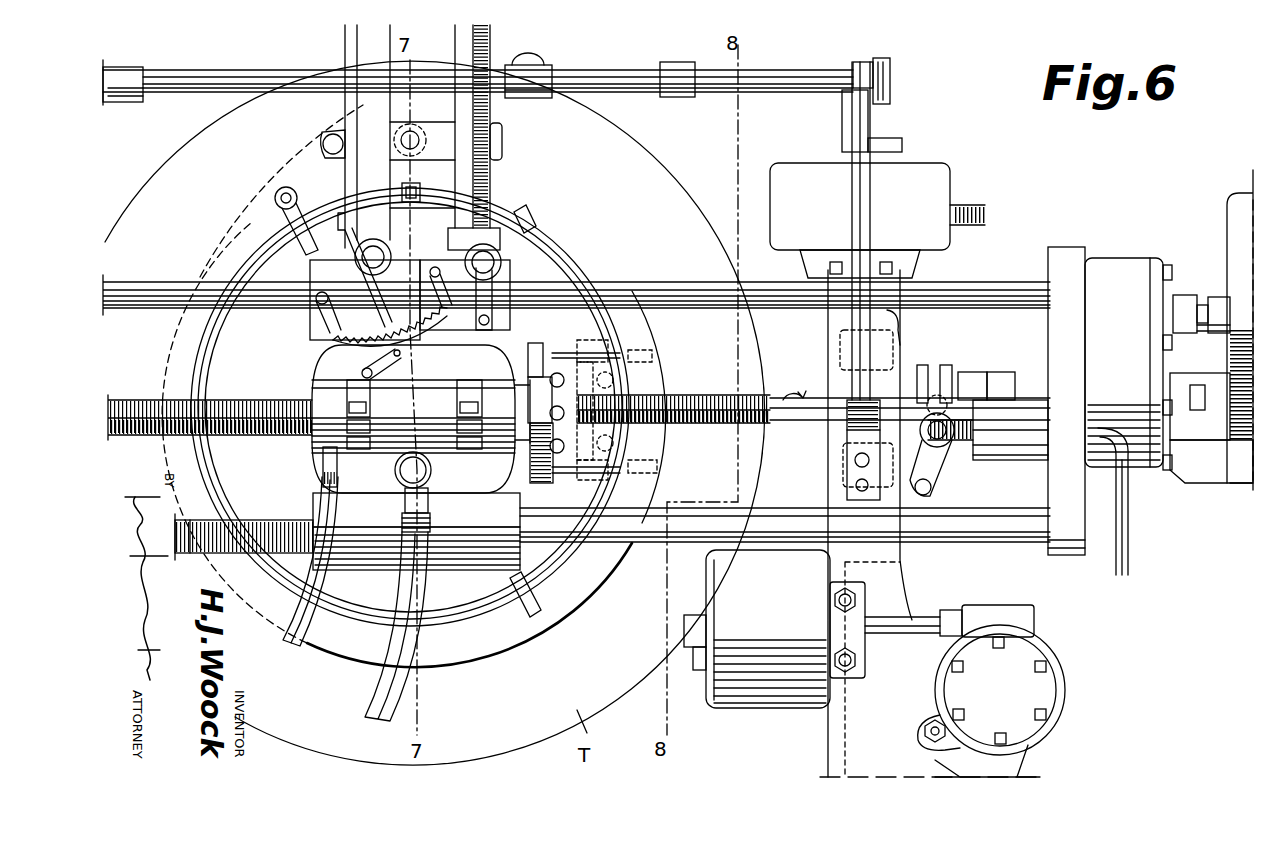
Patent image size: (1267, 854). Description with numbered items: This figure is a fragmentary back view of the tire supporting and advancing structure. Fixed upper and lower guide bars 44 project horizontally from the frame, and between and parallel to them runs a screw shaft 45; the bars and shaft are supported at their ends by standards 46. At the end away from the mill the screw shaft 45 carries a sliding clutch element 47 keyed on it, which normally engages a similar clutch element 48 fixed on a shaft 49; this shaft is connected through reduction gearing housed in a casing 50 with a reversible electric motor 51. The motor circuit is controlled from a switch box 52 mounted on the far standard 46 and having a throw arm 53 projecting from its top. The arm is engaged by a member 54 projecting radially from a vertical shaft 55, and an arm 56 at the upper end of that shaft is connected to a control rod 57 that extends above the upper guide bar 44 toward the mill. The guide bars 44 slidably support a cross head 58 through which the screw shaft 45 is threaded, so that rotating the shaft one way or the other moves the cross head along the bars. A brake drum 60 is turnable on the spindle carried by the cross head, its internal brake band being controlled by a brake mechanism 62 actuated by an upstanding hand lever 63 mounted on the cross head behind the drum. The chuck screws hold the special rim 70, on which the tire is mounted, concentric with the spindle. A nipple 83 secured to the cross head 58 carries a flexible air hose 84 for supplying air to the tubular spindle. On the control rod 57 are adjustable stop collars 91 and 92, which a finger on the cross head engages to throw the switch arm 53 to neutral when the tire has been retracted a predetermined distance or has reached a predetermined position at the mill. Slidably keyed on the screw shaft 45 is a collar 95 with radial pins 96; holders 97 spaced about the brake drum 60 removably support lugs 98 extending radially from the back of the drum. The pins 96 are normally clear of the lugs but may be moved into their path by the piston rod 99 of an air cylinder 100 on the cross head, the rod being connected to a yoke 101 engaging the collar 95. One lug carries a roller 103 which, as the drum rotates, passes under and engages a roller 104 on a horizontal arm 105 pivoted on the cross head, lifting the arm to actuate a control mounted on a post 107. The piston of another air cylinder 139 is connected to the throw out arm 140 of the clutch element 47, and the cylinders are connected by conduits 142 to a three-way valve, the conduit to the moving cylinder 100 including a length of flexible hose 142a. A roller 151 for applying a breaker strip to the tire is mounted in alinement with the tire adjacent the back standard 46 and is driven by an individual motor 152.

The guide bars 44 is at (680, 290).
The screw shaft 45 is at (272, 432).
The standards 46 is at (840, 312).
The sliding clutch element 47 is at (968, 372).
The clutch element 48 is at (996, 372).
The shaft 49 is at (1045, 392).
The casing 50 is at (1120, 280).
The reversible electric motor 51 is at (1243, 195).
The switch box 52 is at (940, 180).
The throw arm 53 is at (905, 145).
The member 54 is at (880, 140).
The vertical shaft 55 is at (855, 197).
The arm 56 is at (892, 80).
The control rod 57 is at (605, 78).
The cross head 58 is at (372, 470).
The brake drum 60 is at (580, 268).
The brake mechanism 62 is at (325, 350).
The hand lever 63 is at (352, 120).
The rim 70 is at (580, 584).
The nipple 83 is at (405, 472).
The flexible air hose 84 is at (392, 676).
The stop collar 91 is at (542, 97).
The stop collar 92 is at (135, 100).
The collar 95 is at (637, 372).
The pins 96 is at (625, 358).
The holders 97 is at (517, 210).
The lugs 98 is at (578, 300).
The piston rod 99 is at (490, 458).
The air cylinder 100 is at (408, 396).
The yoke 101 is at (532, 345).
The roller 103 is at (276, 196).
The roller 104 is at (411, 130).
The horizontal arm 105 is at (503, 141).
The post 107 is at (487, 55).
The air cylinder 139 is at (996, 462).
The throw out arm 140 is at (940, 462).
The conduits 142 is at (1130, 538).
The flexible hose 142a is at (292, 650).
The roller 151 is at (1062, 670).
The motor 152 is at (760, 702).